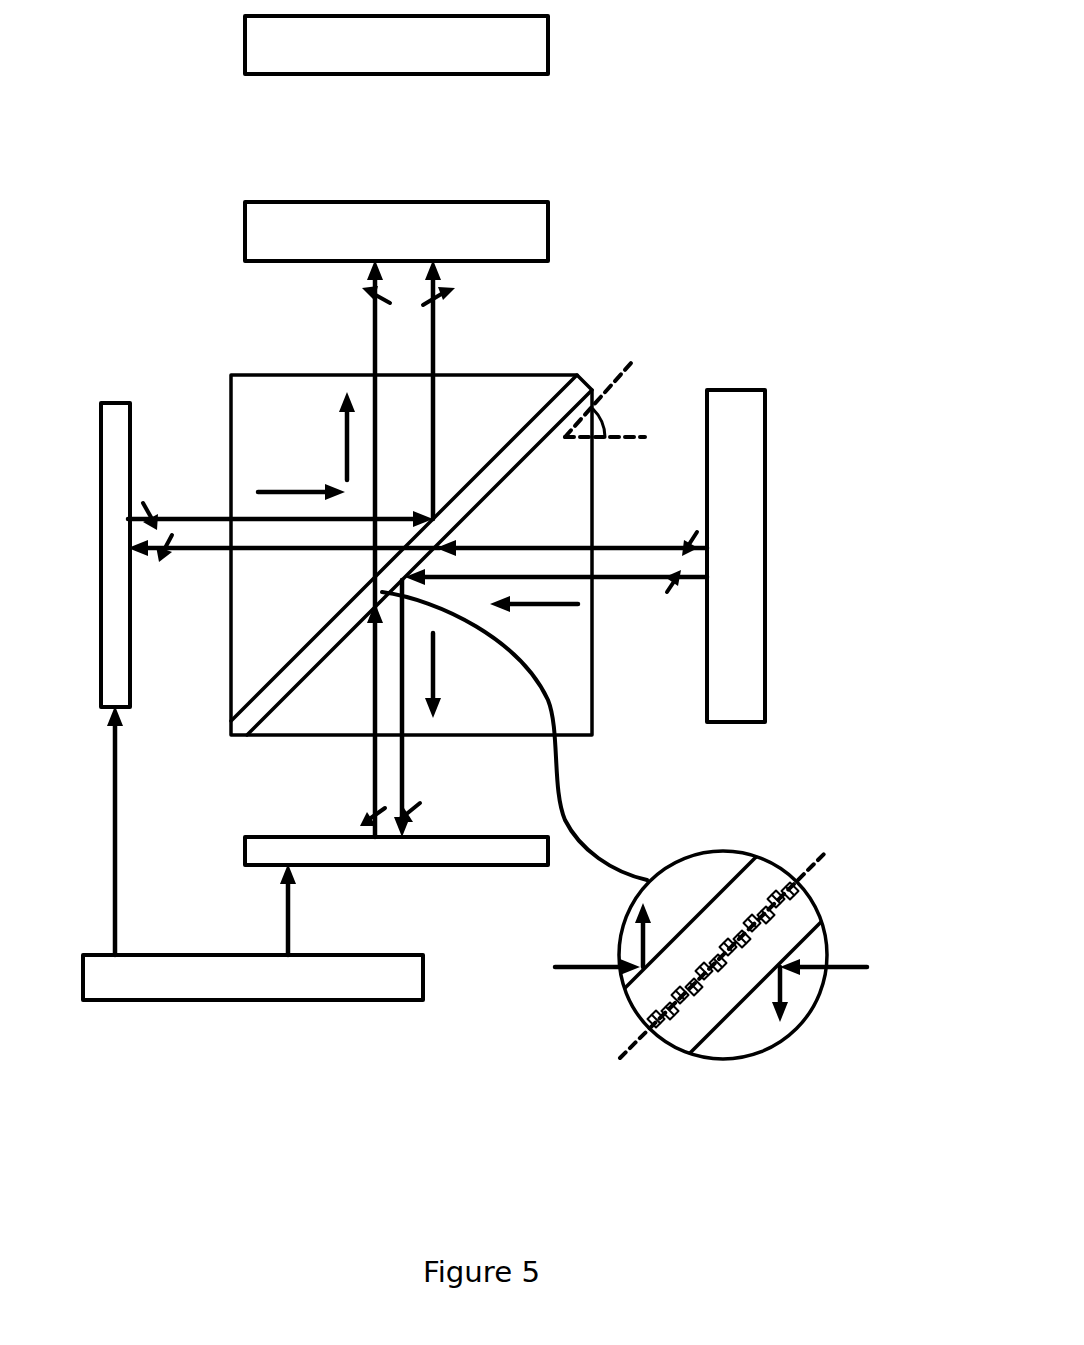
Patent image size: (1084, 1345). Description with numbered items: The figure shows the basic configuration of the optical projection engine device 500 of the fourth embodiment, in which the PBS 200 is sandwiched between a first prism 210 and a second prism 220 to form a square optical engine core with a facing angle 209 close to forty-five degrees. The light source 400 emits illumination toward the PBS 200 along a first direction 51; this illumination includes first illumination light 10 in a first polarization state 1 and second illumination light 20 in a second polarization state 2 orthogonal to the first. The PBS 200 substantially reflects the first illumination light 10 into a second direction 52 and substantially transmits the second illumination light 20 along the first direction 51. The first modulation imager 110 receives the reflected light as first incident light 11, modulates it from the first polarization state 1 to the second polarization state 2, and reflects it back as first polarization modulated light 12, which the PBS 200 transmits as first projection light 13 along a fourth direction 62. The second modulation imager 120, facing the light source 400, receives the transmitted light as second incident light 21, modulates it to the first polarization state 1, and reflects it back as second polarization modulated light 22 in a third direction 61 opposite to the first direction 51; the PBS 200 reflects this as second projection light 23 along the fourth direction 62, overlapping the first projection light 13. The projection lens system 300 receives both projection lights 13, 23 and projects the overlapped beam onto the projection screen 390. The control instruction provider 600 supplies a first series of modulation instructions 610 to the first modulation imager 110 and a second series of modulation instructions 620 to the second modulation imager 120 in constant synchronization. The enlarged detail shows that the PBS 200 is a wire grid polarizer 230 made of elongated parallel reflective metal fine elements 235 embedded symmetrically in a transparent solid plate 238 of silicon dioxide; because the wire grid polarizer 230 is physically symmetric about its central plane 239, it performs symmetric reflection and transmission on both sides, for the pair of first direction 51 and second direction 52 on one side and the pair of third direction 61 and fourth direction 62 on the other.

The projection screen 390 is at (548, 45).
The projection lens system 300 is at (548, 236).
The optical projection engine device 500 is at (702, 303).
The light source 400 is at (733, 722).
The control instruction provider 600 is at (423, 975).
The second modulation imager 120 is at (118, 400).
The first modulation imager 110 is at (480, 867).
The second series of modulation instructions 620 is at (118, 910).
The first series of modulation instructions 610 is at (290, 923).
The PBS 200 is at (235, 737).
The second prism 220 is at (231, 375).
The facing angle 209 is at (605, 428).
The first projection light 13 is at (373, 343).
The second projection light 23 is at (437, 325).
The first polarization modulated light 12 is at (372, 795).
The first incident light 11 is at (407, 747).
The second polarization modulated light 22 is at (200, 518).
The second incident light 21 is at (288, 553).
The second illumination light 20 is at (652, 548).
The second polarization state 2 is at (688, 540).
The first illumination light 10 is at (632, 582).
The first polarization state 1 is at (672, 594).
The first direction 51 is at (560, 607).
The second direction 52 is at (437, 683).
The third direction 61 is at (262, 492).
The fourth direction 62 is at (340, 404).
The first prism 210 is at (598, 720).
The central plane 239 is at (728, 956).
The elongated parallel reflective metal fine elements 235 is at (672, 1050).
The transparent solid plate 238 is at (632, 1000).
The wire grid polarizer 230 is at (572, 1047).